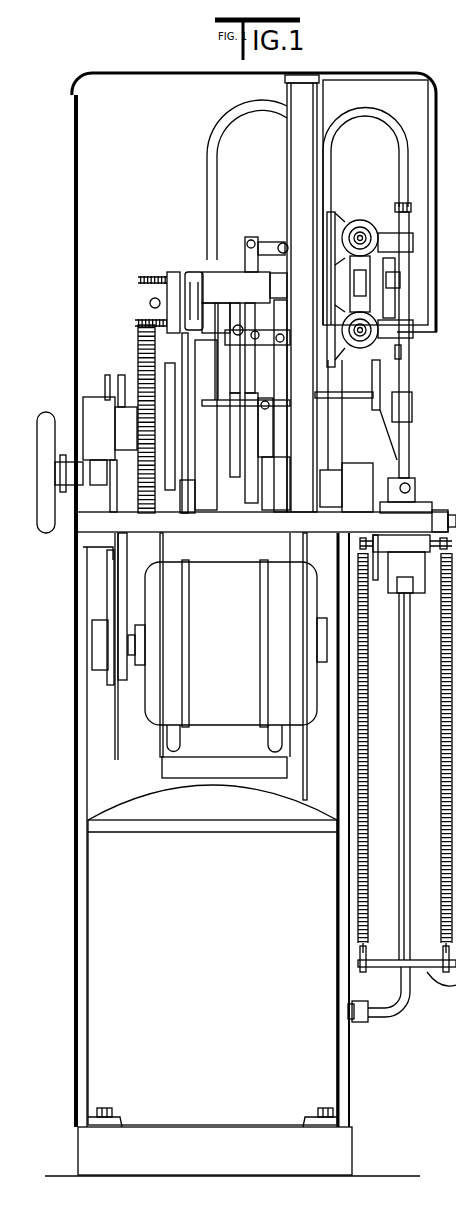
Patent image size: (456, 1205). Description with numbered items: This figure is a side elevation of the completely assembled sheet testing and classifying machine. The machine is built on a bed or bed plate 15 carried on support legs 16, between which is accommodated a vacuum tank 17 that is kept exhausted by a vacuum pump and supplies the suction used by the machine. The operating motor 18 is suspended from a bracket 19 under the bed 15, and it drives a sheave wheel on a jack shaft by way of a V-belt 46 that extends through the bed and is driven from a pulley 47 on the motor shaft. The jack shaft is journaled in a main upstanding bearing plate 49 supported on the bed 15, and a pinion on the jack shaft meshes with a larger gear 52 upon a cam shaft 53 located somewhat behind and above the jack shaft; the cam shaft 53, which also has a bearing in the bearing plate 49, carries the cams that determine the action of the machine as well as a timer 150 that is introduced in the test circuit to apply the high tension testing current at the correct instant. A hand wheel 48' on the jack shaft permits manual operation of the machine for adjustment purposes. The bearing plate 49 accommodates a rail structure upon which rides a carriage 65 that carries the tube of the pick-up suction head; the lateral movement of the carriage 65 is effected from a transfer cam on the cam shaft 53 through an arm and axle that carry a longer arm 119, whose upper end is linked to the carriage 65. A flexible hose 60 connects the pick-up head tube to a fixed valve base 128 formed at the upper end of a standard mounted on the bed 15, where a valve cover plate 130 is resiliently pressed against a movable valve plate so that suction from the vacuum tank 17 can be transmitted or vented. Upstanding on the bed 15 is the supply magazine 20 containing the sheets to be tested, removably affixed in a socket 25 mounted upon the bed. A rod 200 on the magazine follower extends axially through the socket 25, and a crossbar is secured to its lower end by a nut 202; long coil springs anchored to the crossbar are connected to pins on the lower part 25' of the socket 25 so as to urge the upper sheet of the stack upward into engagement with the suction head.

The bed plate 15 is at (432, 522).
The support legs 16 is at (76, 912).
The vacuum tank 17 is at (112, 1012).
The operating motor 18 is at (232, 710).
The bracket 19 is at (300, 550).
The supply magazine 20 is at (410, 437).
The magazine socket 25 is at (411, 485).
The lower part of magazine socket 25' is at (406, 586).
The V-belt 46 is at (110, 586).
The pulley 47 is at (108, 678).
The hand wheel 48' is at (71, 486).
The main upstanding bearing plate 49 is at (293, 165).
The larger gear 52 is at (136, 324).
The cam shaft 53 is at (140, 400).
The flexible hose 60 is at (378, 118).
The carriage 65 is at (365, 208).
The longer arm 119 is at (336, 435).
The fixed valve base 128 is at (197, 265).
The valve cover plate 130 is at (163, 265).
The timer 150 is at (92, 405).
The rod 200 is at (410, 780).
The nut 202 is at (415, 975).